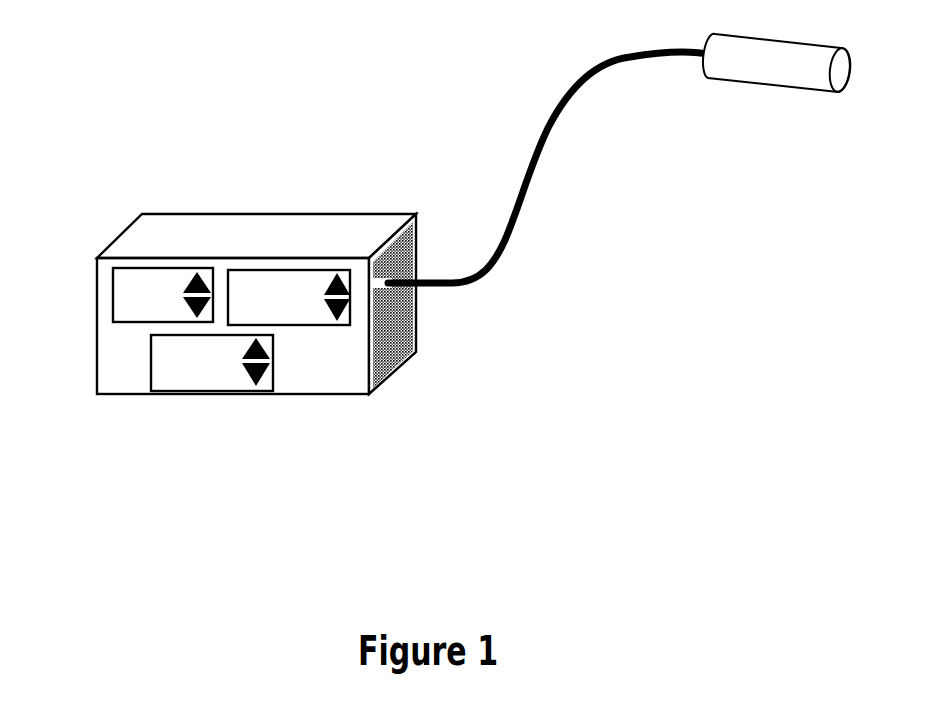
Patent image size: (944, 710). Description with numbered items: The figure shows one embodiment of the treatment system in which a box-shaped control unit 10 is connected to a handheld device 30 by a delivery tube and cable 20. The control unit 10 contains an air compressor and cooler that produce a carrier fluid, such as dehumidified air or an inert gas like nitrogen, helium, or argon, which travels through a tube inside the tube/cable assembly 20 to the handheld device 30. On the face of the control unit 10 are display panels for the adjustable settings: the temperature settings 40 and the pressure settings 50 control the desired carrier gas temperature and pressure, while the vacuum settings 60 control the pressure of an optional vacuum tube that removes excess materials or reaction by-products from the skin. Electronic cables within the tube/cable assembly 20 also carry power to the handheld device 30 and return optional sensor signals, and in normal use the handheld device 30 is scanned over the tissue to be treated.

The control unit 10 is at (268, 250).
The delivery tube and cable 20 is at (524, 160).
The handheld device 30 is at (786, 82).
The temperature settings 40 is at (104, 292).
The pressure settings 50 is at (210, 400).
The vacuum settings 60 is at (337, 334).